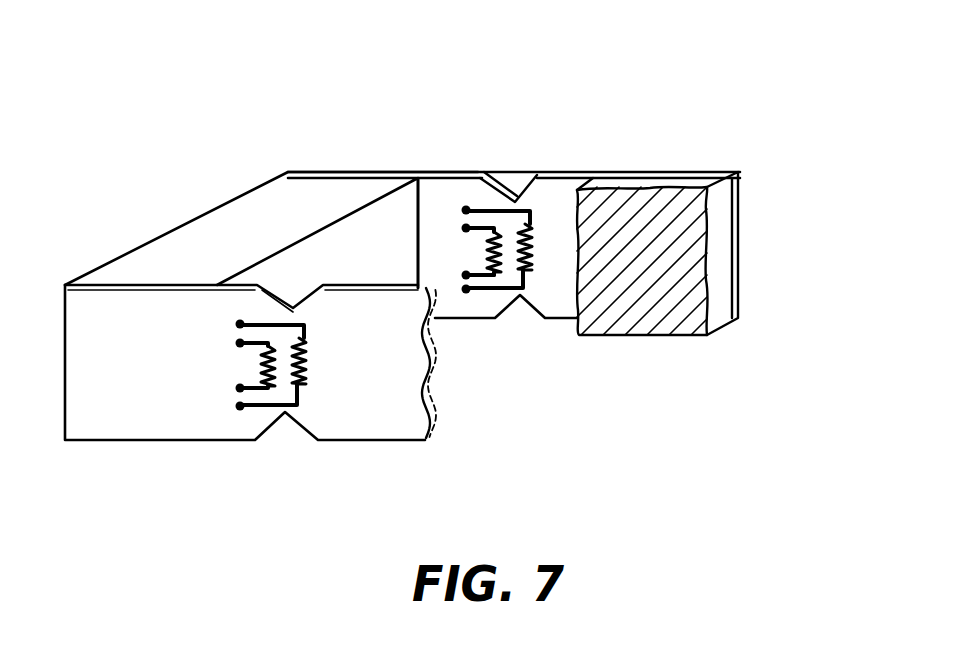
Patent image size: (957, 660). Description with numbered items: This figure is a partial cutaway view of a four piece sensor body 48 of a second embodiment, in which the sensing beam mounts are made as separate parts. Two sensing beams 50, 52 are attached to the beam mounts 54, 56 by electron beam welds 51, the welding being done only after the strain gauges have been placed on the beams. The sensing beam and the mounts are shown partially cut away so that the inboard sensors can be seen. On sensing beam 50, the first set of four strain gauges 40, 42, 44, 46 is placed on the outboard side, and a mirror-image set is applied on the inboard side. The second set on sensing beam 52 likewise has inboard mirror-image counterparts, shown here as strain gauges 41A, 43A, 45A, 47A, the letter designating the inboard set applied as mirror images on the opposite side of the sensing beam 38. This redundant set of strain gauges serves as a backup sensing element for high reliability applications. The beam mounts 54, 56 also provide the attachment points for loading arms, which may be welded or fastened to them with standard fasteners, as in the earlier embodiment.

The sensing beam 38 is at (413, 370).
The strain gauge 40 is at (262, 368).
The strain gauge 41A is at (488, 245).
The strain gauge 42 is at (262, 378).
The strain gauge 43A is at (487, 270).
The strain gauge 44 is at (305, 343).
The strain gauge 45A is at (530, 228).
The strain gauge 46 is at (305, 378).
The strain gauge 47A is at (533, 268).
The four piece sensor body 48 is at (437, 150).
The sensing beam 50 is at (121, 370).
The electron beam weld 51 is at (333, 177).
The sensing beam 52 is at (531, 180).
The beam mount 54 is at (255, 244).
The beam mount 56 is at (720, 248).